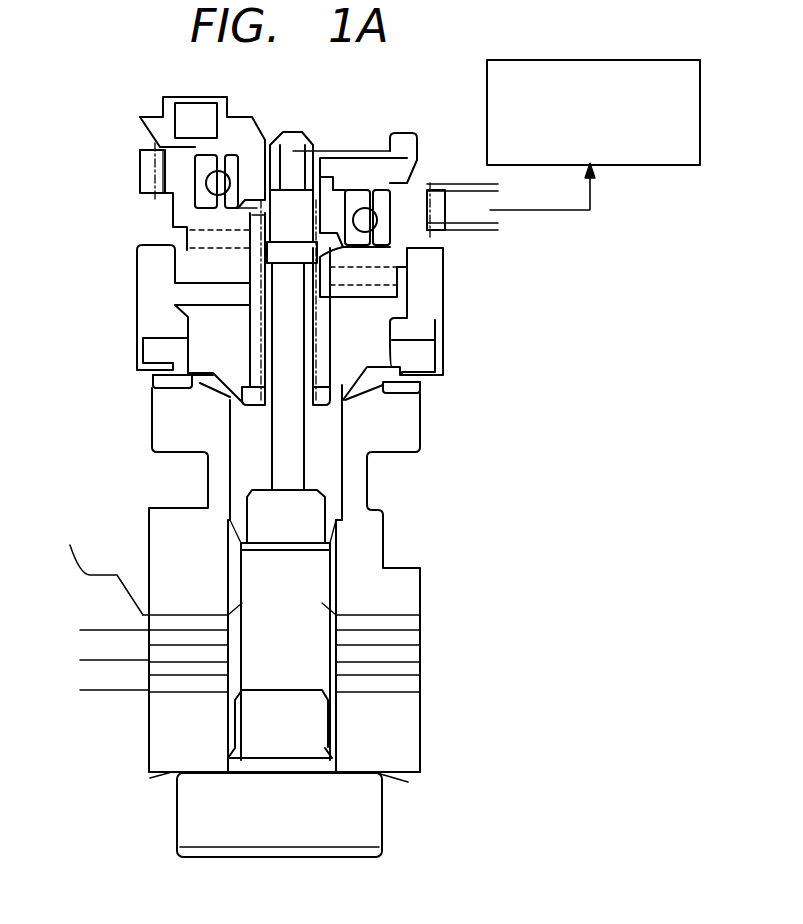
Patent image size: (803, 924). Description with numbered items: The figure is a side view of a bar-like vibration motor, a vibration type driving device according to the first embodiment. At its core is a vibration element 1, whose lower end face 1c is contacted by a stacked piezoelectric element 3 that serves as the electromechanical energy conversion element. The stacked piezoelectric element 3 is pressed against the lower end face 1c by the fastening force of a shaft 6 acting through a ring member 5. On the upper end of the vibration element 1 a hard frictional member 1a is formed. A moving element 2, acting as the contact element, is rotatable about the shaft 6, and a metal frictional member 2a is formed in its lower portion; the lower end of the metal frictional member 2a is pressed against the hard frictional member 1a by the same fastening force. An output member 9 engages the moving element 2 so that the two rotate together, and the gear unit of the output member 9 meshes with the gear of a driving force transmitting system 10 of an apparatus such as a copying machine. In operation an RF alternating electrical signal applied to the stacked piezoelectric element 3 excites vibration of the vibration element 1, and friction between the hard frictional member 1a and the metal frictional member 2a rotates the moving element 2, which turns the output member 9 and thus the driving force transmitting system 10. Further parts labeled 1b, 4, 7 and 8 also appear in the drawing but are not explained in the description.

The vibration element 1 is at (412, 423).
The hard frictional member 1a is at (422, 385).
The step portion of housing 1b is at (368, 485).
The lower end face 1c is at (400, 623).
The moving element 2 is at (440, 280).
The metal frictional member 2a is at (443, 347).
The stacked piezoelectric element 3 is at (410, 683).
The lead wires 4 is at (103, 603).
The ring member 5 is at (412, 735).
The shaft 6 is at (377, 815).
The retaining member 7 is at (408, 782).
The guide sleeve 8 is at (250, 377).
The output member 9 is at (140, 178).
The driving force transmitting system 10 is at (643, 58).